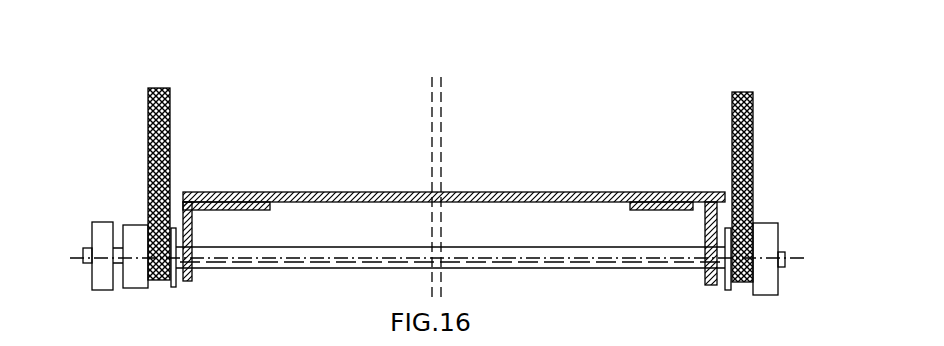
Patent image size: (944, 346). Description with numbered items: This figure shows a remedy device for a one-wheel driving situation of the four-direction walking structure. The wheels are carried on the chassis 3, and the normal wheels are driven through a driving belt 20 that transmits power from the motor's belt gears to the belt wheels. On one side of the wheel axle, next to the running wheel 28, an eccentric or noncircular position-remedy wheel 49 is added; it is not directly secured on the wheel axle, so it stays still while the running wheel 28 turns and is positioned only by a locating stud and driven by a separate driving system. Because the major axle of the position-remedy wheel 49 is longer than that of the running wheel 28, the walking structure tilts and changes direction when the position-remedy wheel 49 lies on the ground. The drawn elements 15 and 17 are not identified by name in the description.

The chassis 3 is at (298, 191).
The shaft 15 is at (212, 252).
The under plate 17 is at (690, 200).
The driving belt 20 is at (139, 238).
The running wheel 28 is at (107, 238).
The position-remedy wheel 49 is at (185, 192).